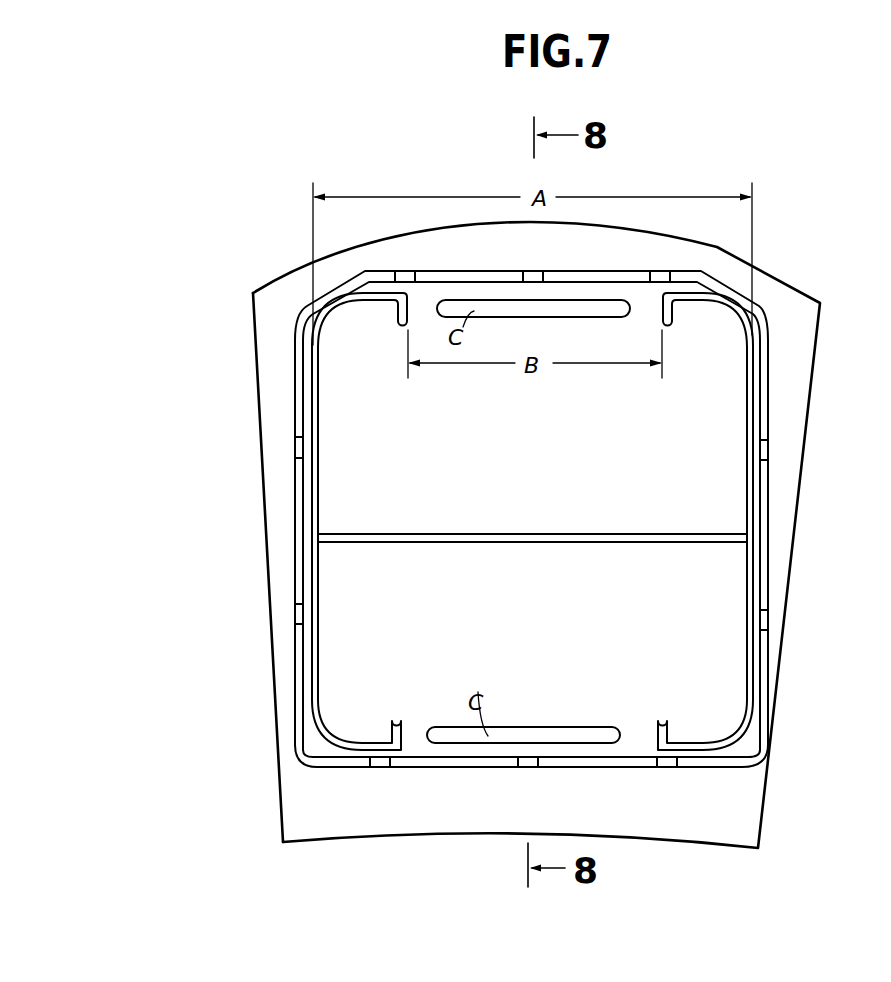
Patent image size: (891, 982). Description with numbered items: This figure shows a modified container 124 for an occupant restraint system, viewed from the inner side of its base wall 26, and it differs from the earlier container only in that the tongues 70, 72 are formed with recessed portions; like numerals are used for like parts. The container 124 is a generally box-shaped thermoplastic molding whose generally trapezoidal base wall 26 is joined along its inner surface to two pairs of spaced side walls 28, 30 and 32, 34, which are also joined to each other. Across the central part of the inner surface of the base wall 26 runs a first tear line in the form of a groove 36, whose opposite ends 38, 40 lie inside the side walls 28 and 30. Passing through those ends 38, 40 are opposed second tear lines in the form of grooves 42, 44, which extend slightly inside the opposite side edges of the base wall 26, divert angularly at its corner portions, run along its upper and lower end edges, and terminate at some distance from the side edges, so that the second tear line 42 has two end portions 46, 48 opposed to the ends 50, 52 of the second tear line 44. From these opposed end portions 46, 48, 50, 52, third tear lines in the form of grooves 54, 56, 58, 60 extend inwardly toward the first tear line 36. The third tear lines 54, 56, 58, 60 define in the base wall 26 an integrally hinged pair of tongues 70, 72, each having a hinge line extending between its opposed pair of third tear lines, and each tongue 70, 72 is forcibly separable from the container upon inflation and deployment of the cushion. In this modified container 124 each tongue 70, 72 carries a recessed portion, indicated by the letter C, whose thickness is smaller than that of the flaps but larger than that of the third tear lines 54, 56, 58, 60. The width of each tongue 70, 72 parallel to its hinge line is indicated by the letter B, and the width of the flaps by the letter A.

The modified container 124 is at (801, 272).
The base wall 26 is at (272, 300).
The side wall 28 is at (763, 535).
The side wall 30 is at (293, 518).
The side wall 32 is at (630, 765).
The side wall 34 is at (555, 271).
The first tear line in the form of a groove 36 is at (493, 533).
The end of first tear line 38 is at (747, 537).
The end of first tear line 40 is at (318, 534).
The second tear line in the form of a groove 42 is at (748, 510).
The second tear line in the form of a groove 44 is at (312, 473).
The end portion of second tear line 46 is at (673, 742).
The end portion of second tear line 48 is at (683, 295).
The end of second tear line 50 is at (388, 743).
The end of second tear line 52 is at (393, 297).
The third tear line in the form of a groove 54 is at (655, 720).
The third tear line in the form of a groove 56 is at (403, 733).
The third tear line in the form of a groove 58 is at (673, 323).
The third tear line in the form of a groove 60 is at (400, 318).
The tongue 70 is at (415, 745).
The tongue 72 is at (423, 317).